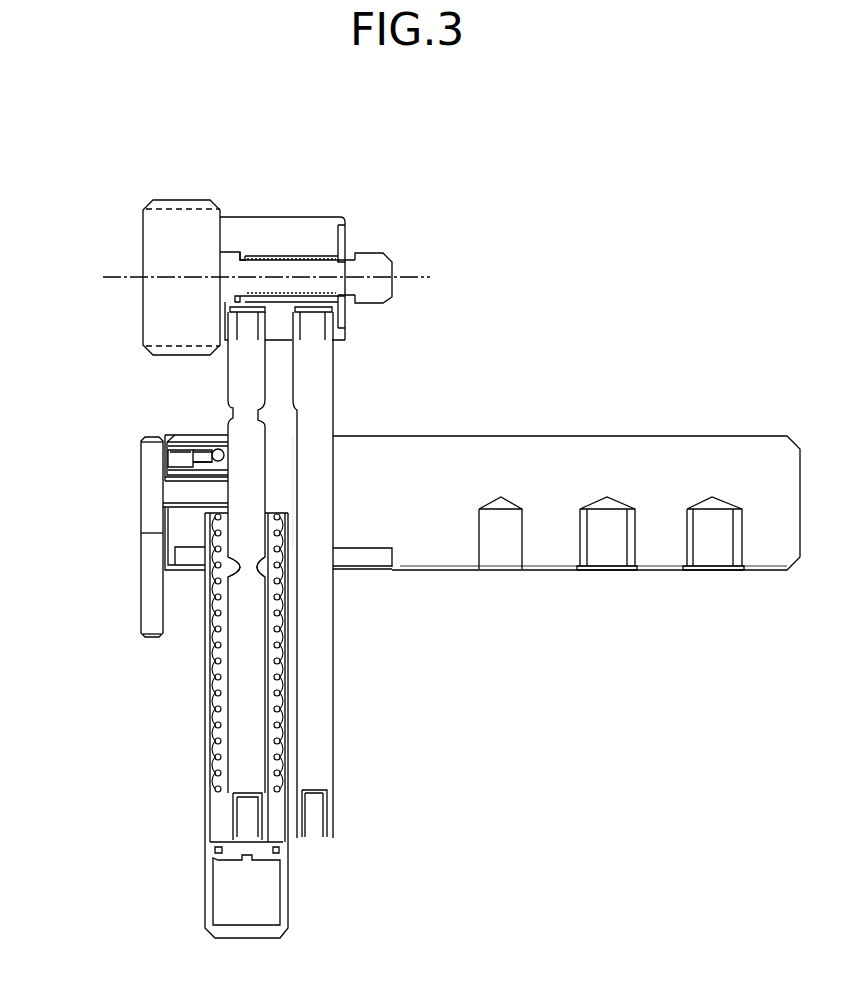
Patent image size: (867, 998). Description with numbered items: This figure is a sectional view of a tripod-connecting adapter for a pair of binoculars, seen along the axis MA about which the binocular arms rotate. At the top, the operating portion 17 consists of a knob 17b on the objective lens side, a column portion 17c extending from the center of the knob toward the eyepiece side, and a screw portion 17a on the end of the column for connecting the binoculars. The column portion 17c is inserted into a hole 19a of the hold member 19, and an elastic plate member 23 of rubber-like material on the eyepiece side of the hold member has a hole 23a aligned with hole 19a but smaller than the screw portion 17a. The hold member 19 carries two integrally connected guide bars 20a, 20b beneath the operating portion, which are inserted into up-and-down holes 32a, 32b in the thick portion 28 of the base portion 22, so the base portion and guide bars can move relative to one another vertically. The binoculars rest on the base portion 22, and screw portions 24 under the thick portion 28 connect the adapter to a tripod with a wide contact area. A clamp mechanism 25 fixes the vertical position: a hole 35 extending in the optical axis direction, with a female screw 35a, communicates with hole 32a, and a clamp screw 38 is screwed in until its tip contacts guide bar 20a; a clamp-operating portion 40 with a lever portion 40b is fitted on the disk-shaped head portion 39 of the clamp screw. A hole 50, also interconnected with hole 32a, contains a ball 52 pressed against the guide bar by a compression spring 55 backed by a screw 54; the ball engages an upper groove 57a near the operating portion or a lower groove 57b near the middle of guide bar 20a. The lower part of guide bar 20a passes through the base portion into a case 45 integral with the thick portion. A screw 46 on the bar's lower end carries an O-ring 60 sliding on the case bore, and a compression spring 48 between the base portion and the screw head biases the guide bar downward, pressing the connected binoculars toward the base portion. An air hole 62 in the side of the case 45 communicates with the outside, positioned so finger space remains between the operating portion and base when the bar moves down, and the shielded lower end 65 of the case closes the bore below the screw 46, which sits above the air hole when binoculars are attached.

The operating portion 17 is at (125, 260).
The screw portion 17a is at (375, 260).
The knob 17b is at (165, 225).
The column portion 17c is at (253, 265).
The hold member 19 is at (306, 228).
The hole 19a is at (263, 262).
The elastic plate member 23 is at (344, 243).
The hole 23a is at (347, 288).
The axis MA is at (408, 275).
The guide bar 20a is at (252, 358).
The guide bar 20b is at (317, 384).
The base portion 22 is at (606, 436).
The thick portion 28 is at (684, 455).
The screw portions 24 is at (505, 558).
The hole 32a is at (262, 486).
The hole 32b is at (326, 508).
The hole 35 is at (180, 483).
The female screw 35a is at (188, 498).
The clamp screw 38 is at (141, 527).
The head portion 39 is at (141, 535).
The clamp-operating portion 40 is at (152, 605).
The lever portion 40b is at (142, 618).
The clamp mechanism 25 is at (122, 568).
The hole 50 is at (172, 440).
The ball 52 is at (227, 470).
The screw 54 is at (177, 458).
The compression spring 55 is at (224, 455).
The groove 57a is at (233, 422).
The groove 57b is at (260, 570).
The case 45 is at (205, 780).
The compression spring 48 is at (279, 642).
The air hole 62 is at (212, 745).
The screw 46 is at (260, 860).
The O-ring 60 is at (280, 850).
The end cap 65 is at (190, 880).